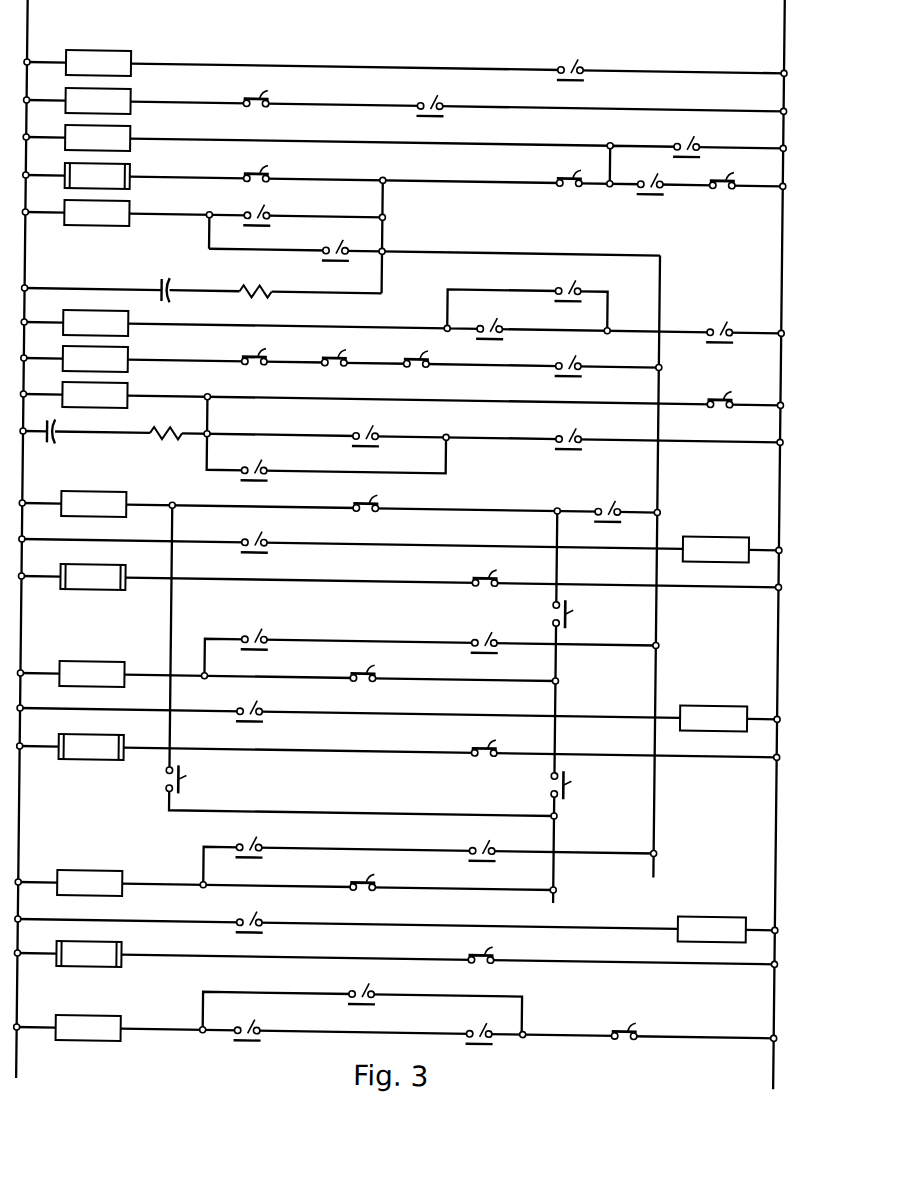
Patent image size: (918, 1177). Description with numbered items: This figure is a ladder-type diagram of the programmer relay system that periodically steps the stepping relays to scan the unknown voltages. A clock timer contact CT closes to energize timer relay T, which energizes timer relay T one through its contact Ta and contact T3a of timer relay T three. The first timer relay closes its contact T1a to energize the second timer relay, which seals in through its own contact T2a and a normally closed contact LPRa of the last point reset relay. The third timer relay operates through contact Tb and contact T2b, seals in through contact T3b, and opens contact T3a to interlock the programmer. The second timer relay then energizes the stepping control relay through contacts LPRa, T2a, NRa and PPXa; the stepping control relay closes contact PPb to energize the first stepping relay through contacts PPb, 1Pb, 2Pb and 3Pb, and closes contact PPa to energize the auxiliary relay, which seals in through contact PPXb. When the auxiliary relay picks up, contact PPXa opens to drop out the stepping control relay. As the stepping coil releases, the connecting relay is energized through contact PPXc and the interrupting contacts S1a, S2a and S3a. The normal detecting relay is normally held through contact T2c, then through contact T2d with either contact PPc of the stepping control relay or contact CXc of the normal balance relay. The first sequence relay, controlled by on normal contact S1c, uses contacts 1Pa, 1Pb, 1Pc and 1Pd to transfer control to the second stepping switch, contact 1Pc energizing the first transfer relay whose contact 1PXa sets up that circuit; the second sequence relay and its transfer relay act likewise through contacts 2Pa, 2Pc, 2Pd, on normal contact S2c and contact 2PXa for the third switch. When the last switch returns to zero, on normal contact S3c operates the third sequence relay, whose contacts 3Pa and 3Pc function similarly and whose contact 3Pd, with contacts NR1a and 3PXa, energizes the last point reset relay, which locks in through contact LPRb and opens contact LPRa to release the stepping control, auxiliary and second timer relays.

The clock timer contact CT is at (580, 64).
The contact of timer relay T3 T3a is at (270, 93).
The contact of timer relay T Ta is at (436, 100).
The contact of timer relay T1 T1a is at (698, 141).
The contact of auxiliary relay PPX PPXa is at (276, 168).
The contact of normal reset relay NR NRa is at (580, 170).
The contact of timer relay T2 T2a is at (640, 178).
The contact of last point reset relay LPR LPRa is at (740, 176).
The contact of control relay PP PPa is at (269, 209).
The contact of auxiliary relay PPX PPXb is at (349, 245).
The contact of timer relay T3 T3b is at (581, 286).
The contact of timer relay T2 T2b is at (501, 323).
The contact of timer relay T Tb is at (727, 326).
The interrupting contact of stepping switch S3 S3a is at (270, 351).
The interrupting contact of stepping switch S2 S2a is at (350, 352).
The interrupting contact of stepping switch S1 S1a is at (432, 354).
The contact of auxiliary relay PPX PPXc is at (585, 360).
The contact of timer relay T2 T2c is at (730, 394).
The contact of normal balance relay CX CXc is at (378, 430).
The contact of timer relay T2 T2d is at (581, 433).
The contact of control relay PP PPc is at (266, 464).
The contact of sequence relay 1P 1Pa is at (378, 498).
The contact of control relay PP PPb is at (619, 506).
The on normal contact of stepping switch S1 S1c is at (266, 536).
The contact of sequence relay 1P 1Pc is at (496, 573).
The contact of sequence relay 1P 1Pb is at (580, 614).
The contact of transfer relay 1PX 1PXa is at (272, 633).
The contact of sequence relay 1P 1Pd is at (497, 637).
The contact of sequence relay 2P 2Pa is at (376, 668).
The on normal contact of stepping switch S2 S2c is at (261, 705).
The contact of sequence relay 2P 2Pc is at (496, 743).
The contact of sequence relay 3P 3Pb is at (194, 779).
The contact of sequence relay 2P 2Pb is at (578, 785).
The contact of transfer relay 2PX 2PXa is at (267, 841).
The contact of sequence relay 2P 2Pd is at (495, 845).
The contact of sequence relay 3P 3Pa is at (376, 877).
The on normal contact of stepping switch S3 S3c is at (261, 916).
The contact of sequence relay 3P 3Pc is at (493, 950).
The contact of last point reset relay LPR LPRb is at (379, 988).
The contact of transfer relay 3PX 3PXa is at (265, 1024).
The contact of sequence relay 3P 3Pd is at (491, 1028).
The contact of normal reset relay NR1a is at (644, 1026).